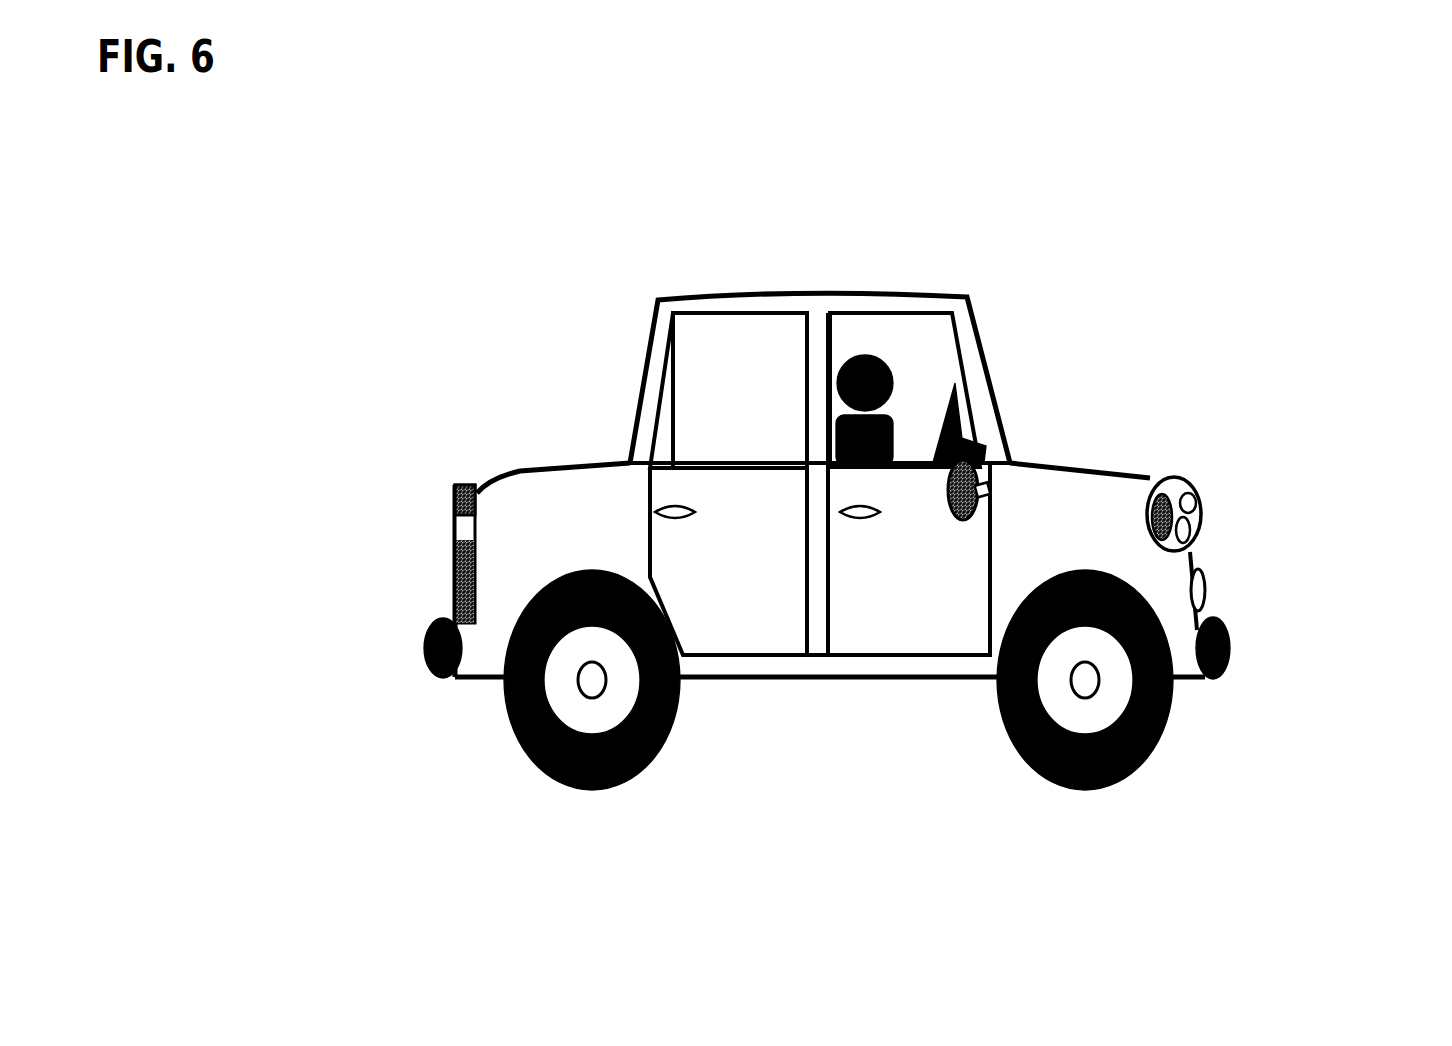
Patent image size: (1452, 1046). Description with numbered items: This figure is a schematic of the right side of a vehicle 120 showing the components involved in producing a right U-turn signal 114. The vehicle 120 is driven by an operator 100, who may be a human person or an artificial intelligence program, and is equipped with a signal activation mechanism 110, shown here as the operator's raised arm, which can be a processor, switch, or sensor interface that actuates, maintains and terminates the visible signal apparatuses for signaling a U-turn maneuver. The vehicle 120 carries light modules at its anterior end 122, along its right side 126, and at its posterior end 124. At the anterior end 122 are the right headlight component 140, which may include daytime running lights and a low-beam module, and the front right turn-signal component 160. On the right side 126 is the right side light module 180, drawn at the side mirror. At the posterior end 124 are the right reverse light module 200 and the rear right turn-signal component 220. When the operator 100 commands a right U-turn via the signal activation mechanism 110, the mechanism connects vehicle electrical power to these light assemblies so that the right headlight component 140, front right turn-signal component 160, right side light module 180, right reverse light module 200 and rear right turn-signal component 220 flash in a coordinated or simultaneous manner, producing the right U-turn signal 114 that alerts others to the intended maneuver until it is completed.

The right U-turn signal 114 is at (273, 164).
The operator 100 is at (828, 324).
The signal activation mechanism 110 is at (934, 349).
The vehicle 120 is at (789, 395).
The anterior end 122 is at (1231, 578).
The posterior end 124 is at (385, 578).
The right side 126 is at (830, 784).
The right headlight component 140 is at (1266, 469).
The front right turn-signal component 160 is at (1162, 421).
The right side light module 180 is at (913, 623).
The right reverse light module 200 is at (357, 533).
The rear right turn-signal component 220 is at (421, 421).